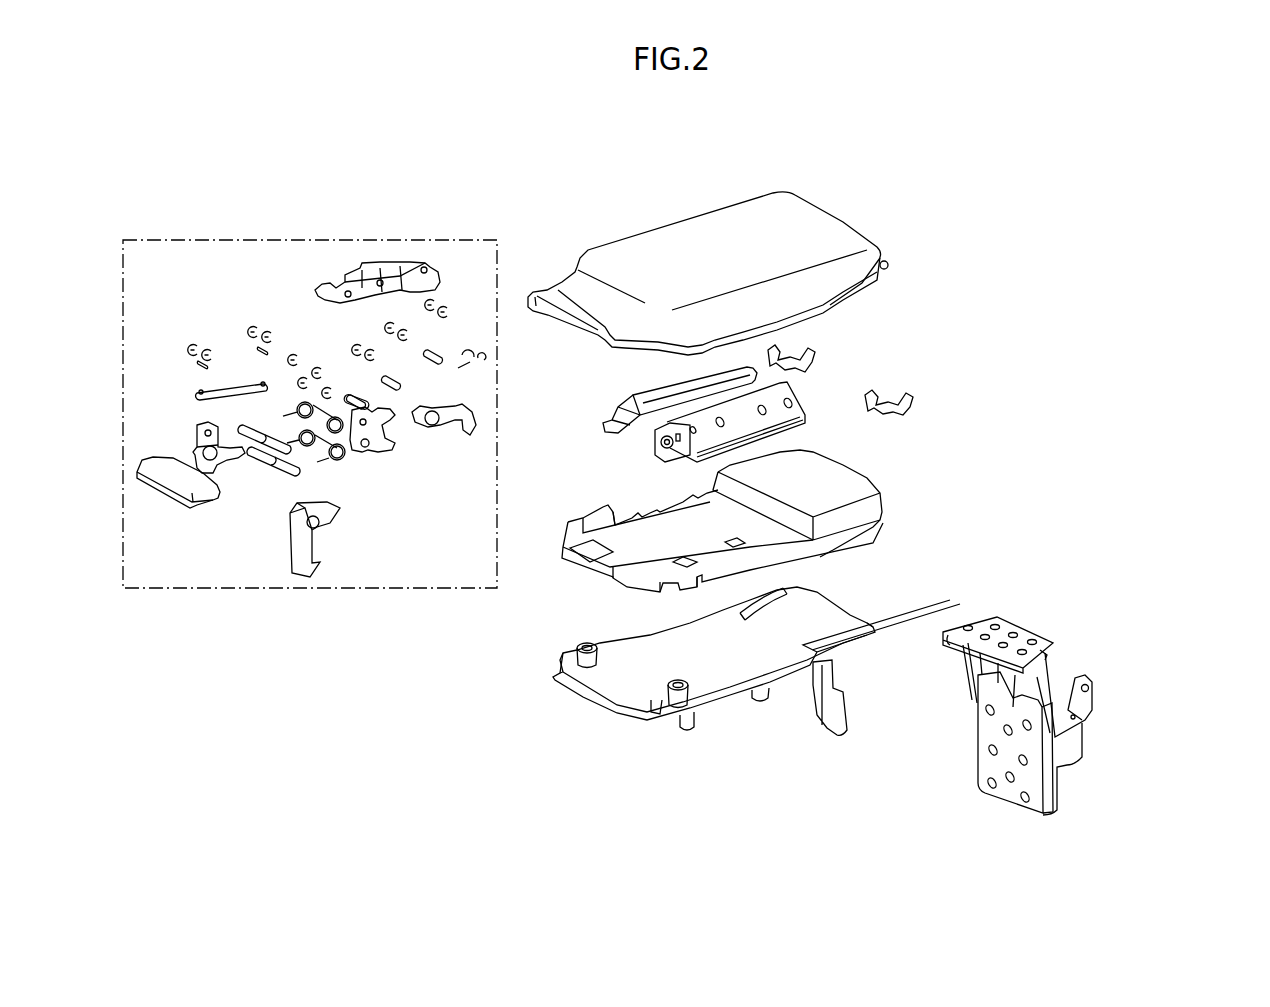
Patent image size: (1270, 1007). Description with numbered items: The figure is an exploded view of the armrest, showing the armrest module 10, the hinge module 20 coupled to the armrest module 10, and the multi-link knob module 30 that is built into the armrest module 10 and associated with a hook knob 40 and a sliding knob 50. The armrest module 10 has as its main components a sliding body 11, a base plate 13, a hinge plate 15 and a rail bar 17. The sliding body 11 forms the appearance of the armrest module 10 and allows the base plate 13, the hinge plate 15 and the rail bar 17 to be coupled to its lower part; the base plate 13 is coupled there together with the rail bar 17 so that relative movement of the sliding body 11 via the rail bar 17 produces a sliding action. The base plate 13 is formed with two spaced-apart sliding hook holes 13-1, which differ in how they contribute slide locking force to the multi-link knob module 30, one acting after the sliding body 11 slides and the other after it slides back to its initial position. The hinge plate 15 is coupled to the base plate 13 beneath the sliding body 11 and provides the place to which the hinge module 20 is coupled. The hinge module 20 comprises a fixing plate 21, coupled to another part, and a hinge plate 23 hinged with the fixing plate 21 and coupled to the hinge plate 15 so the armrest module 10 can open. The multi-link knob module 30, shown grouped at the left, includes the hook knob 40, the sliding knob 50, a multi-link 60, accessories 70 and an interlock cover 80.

The armrest module 10 is at (922, 280).
The sliding body 11 is at (813, 215).
The base plate 13 is at (838, 483).
The sliding hook holes 13-1 is at (697, 562).
The hinge plate 15 is at (830, 615).
The rail bar 17 is at (772, 402).
The hinge module 20 is at (1091, 722).
The fixing plate 21 is at (1032, 780).
The hinge plate 23 is at (1083, 705).
The multi-link knob module 30 is at (163, 240).
The hook knob 40 is at (310, 577).
The sliding knob 50 is at (190, 493).
The multi-link 60 is at (417, 453).
The accessories 70 is at (330, 348).
The interlock cover 80 is at (405, 282).